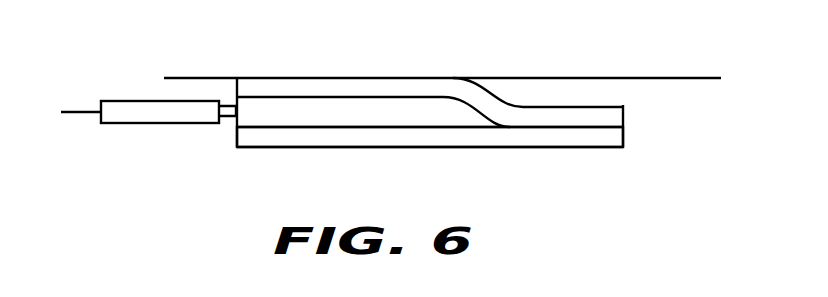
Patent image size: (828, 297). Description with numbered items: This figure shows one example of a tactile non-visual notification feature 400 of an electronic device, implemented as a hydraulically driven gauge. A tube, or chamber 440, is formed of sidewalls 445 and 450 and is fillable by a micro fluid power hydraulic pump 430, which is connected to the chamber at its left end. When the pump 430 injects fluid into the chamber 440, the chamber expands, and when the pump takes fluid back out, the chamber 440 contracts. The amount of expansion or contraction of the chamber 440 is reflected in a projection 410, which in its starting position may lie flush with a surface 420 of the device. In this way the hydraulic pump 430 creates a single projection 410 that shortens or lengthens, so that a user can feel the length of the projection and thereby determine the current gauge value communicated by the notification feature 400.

The tactile non-visual notification feature 400 is at (186, 160).
The projection 410 is at (327, 61).
The surface 420 is at (688, 77).
The micro fluid power hydraulic pump 430 is at (133, 110).
The chamber 440 is at (289, 110).
The sidewall 445 is at (473, 137).
The sidewall 450 is at (409, 88).